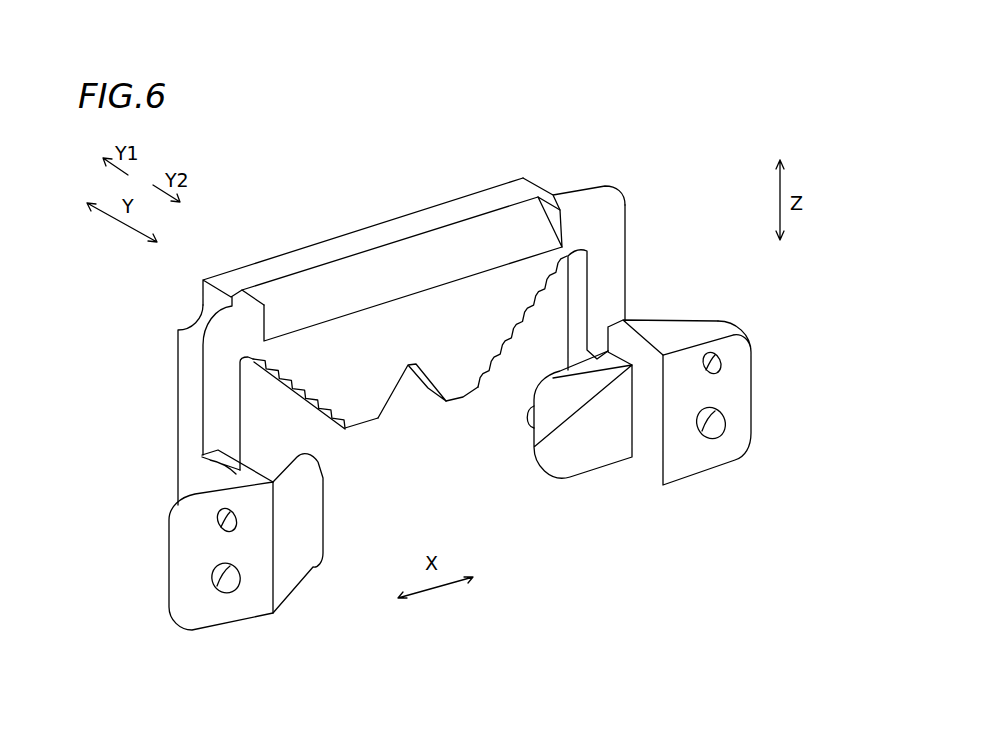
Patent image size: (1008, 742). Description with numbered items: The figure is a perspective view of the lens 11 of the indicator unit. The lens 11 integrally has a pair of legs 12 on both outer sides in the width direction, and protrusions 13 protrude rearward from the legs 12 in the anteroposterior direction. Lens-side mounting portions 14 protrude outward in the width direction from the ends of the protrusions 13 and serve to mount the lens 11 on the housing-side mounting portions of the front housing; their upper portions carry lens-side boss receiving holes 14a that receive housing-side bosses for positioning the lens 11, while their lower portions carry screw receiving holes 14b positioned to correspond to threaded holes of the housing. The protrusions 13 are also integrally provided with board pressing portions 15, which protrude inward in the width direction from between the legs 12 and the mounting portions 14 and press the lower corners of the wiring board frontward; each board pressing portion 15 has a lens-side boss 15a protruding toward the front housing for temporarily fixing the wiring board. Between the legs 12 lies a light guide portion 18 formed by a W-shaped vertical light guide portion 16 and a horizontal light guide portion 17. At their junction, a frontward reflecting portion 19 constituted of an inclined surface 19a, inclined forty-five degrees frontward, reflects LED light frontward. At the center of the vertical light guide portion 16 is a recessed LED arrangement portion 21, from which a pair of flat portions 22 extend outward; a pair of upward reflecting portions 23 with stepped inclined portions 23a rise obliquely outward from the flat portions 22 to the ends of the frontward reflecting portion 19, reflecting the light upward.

The lens 11 is at (579, 131).
The legs 12 is at (188, 388).
The protrusions 13 is at (202, 455).
The lens-side mounting portions 14 is at (250, 603).
The lens-side boss receiving holes 14a is at (222, 522).
The screw receiving holes 14b is at (220, 578).
The board pressing portions 15 is at (310, 532).
The lens-side bosses 15a is at (534, 425).
The vertical light guide portion 16 is at (325, 350).
The horizontal light guide portion 17 is at (283, 267).
The light guide portion 18 is at (347, 163).
The frontward reflecting portion 19 is at (438, 263).
The inclined surface 19a is at (508, 247).
The LED arrangement portion 21 is at (408, 370).
The flat portions 22 is at (367, 423).
The upward reflecting portions 23 is at (252, 357).
The inclined portions 23a is at (284, 399).